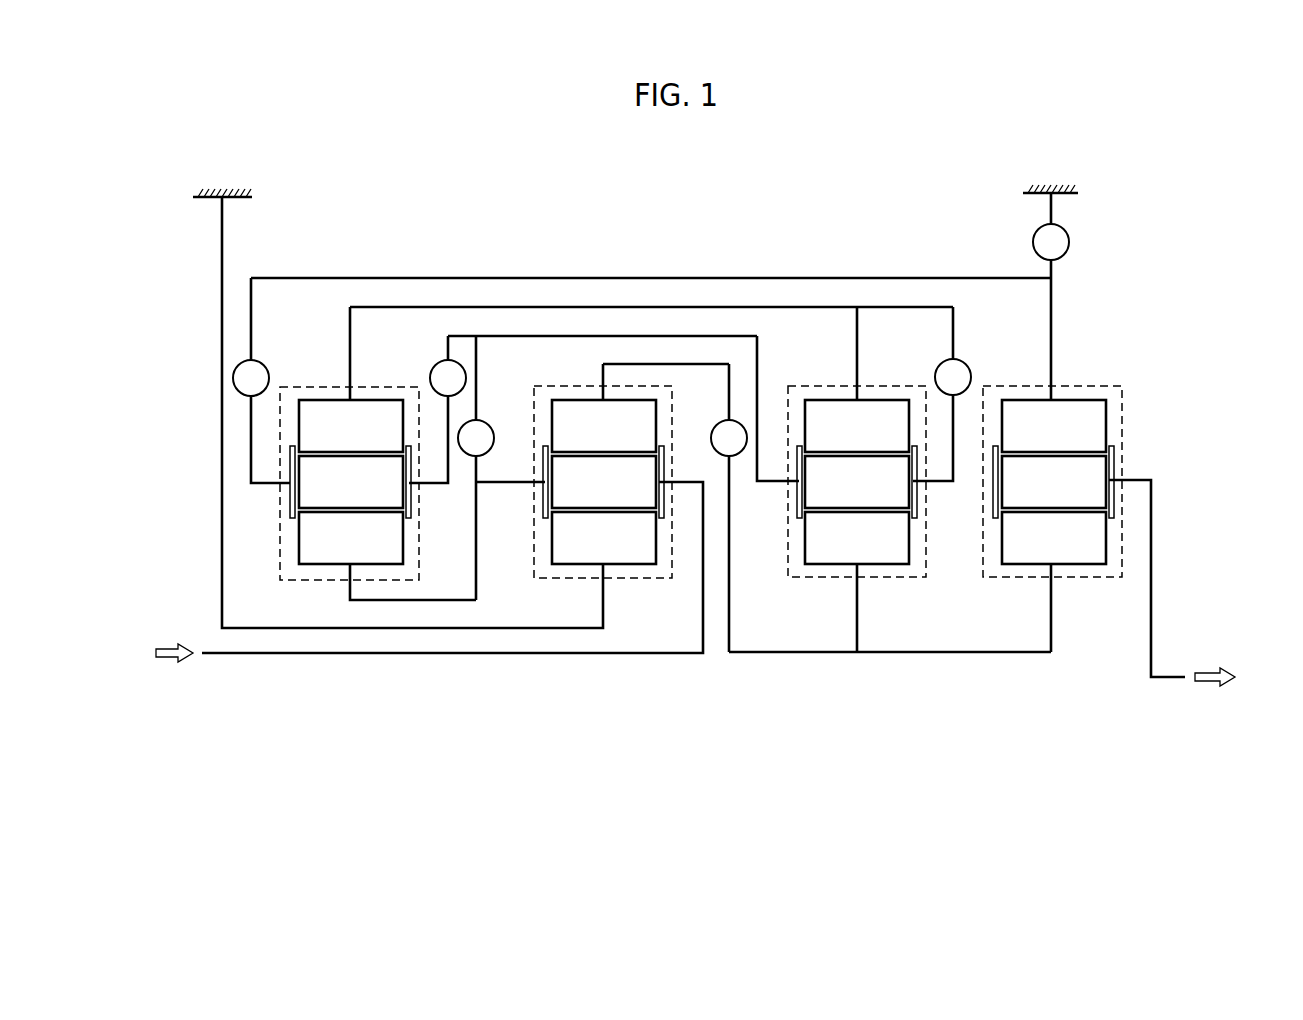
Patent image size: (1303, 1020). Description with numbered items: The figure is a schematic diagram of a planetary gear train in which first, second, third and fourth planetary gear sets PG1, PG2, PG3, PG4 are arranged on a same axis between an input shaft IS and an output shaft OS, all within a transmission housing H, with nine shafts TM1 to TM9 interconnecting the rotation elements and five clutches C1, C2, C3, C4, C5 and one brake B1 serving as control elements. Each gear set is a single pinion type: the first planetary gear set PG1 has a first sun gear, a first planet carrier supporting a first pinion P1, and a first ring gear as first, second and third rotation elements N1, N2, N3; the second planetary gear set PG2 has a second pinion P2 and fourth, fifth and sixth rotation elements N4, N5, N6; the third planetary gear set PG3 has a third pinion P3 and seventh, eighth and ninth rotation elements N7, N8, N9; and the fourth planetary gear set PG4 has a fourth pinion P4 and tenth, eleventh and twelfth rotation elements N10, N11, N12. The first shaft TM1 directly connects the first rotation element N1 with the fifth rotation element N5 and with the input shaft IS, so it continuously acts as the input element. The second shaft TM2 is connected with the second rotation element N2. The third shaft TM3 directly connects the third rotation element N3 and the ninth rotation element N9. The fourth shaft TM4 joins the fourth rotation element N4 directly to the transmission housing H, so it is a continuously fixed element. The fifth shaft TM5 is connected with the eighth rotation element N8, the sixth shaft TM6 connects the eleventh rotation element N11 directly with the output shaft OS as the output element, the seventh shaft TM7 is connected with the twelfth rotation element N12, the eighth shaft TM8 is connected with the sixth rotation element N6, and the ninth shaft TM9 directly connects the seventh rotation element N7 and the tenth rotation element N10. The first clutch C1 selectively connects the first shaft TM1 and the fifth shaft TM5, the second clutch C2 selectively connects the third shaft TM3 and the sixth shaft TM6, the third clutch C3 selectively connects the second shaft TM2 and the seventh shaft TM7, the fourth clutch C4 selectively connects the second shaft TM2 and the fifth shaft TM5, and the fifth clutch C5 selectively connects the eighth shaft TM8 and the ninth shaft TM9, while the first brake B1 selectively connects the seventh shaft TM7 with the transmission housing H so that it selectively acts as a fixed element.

The transmission housing H is at (217, 187).
The input shaft IS is at (212, 655).
The output shaft OS is at (1166, 680).
The first planetary gear set PG1 is at (323, 574).
The second planetary gear set PG2 is at (577, 574).
The third planetary gear set PG3 is at (831, 574).
The fourth planetary gear set PG4 is at (1026, 574).
The first rotation element N1 is at (351, 538).
The second rotation element N2 is at (290, 505).
The third rotation element N3 is at (351, 426).
The fourth rotation element N4 is at (604, 538).
The fifth rotation element N5 is at (543, 500).
The sixth rotation element N6 is at (604, 426).
The seventh rotation element N7 is at (857, 538).
The eighth rotation element N8 is at (798, 500).
The ninth rotation element N9 is at (857, 426).
The tenth rotation element N10 is at (1054, 538).
The eleventh rotation element N11 is at (994, 500).
The twelfth rotation element N12 is at (1054, 426).
The first pinion P1 is at (351, 482).
The second pinion P2 is at (604, 482).
The third pinion P3 is at (857, 482).
The fourth pinion P4 is at (1054, 482).
The first shaft TM1 is at (388, 602).
The second shaft TM2 is at (251, 437).
The third shaft TM3 is at (660, 305).
The fourth shaft TM4 is at (475, 629).
The fifth shaft TM5 is at (757, 356).
The sixth shaft TM6 is at (1143, 478).
The seventh shaft TM7 is at (837, 277).
The eighth shaft TM8 is at (601, 366).
The ninth shaft TM9 is at (912, 654).
The first clutch C1 is at (501, 468).
The second clutch C2 is at (942, 420).
The third clutch C3 is at (251, 378).
The fourth clutch C4 is at (437, 421).
The fifth clutch C5 is at (729, 536).
The first brake B1 is at (1051, 296).